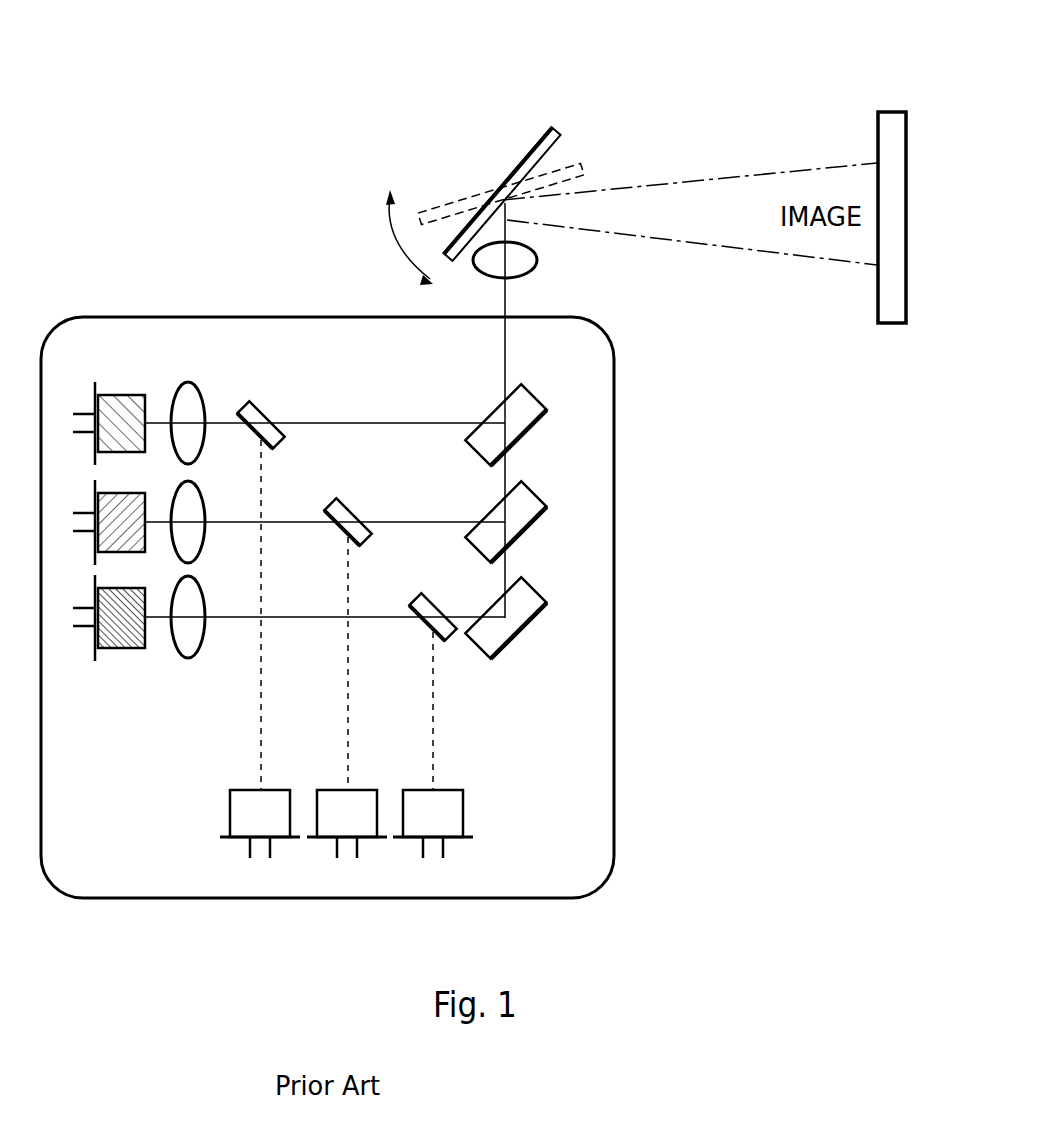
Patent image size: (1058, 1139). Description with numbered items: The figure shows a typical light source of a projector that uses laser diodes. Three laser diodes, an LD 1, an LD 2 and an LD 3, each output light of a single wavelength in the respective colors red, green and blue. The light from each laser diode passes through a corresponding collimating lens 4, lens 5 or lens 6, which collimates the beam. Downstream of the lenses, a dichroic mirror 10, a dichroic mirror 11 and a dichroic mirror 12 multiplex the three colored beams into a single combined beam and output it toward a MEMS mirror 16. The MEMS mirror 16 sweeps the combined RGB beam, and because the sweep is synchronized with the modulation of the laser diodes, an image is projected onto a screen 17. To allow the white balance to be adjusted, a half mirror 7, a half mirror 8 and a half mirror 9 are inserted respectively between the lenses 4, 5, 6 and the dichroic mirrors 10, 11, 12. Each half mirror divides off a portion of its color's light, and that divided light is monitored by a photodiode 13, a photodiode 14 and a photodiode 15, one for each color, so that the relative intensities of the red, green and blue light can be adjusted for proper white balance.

The LD 1 is at (128, 395).
The LD 2 is at (128, 493).
The LD 3 is at (128, 588).
The lens 4 is at (202, 397).
The lens 5 is at (202, 498).
The lens 6 is at (202, 595).
The half mirror 7 is at (265, 403).
The half mirror 8 is at (350, 510).
The half mirror 9 is at (436, 606).
The dichroic mirror 10 is at (530, 393).
The dichroic mirror 11 is at (530, 490).
The dichroic mirror 12 is at (530, 588).
The photodiode 13 is at (275, 788).
The photodiode 14 is at (362, 788).
The photodiode 15 is at (448, 788).
The MEMS mirror 16 is at (562, 125).
The screen 17 is at (892, 112).